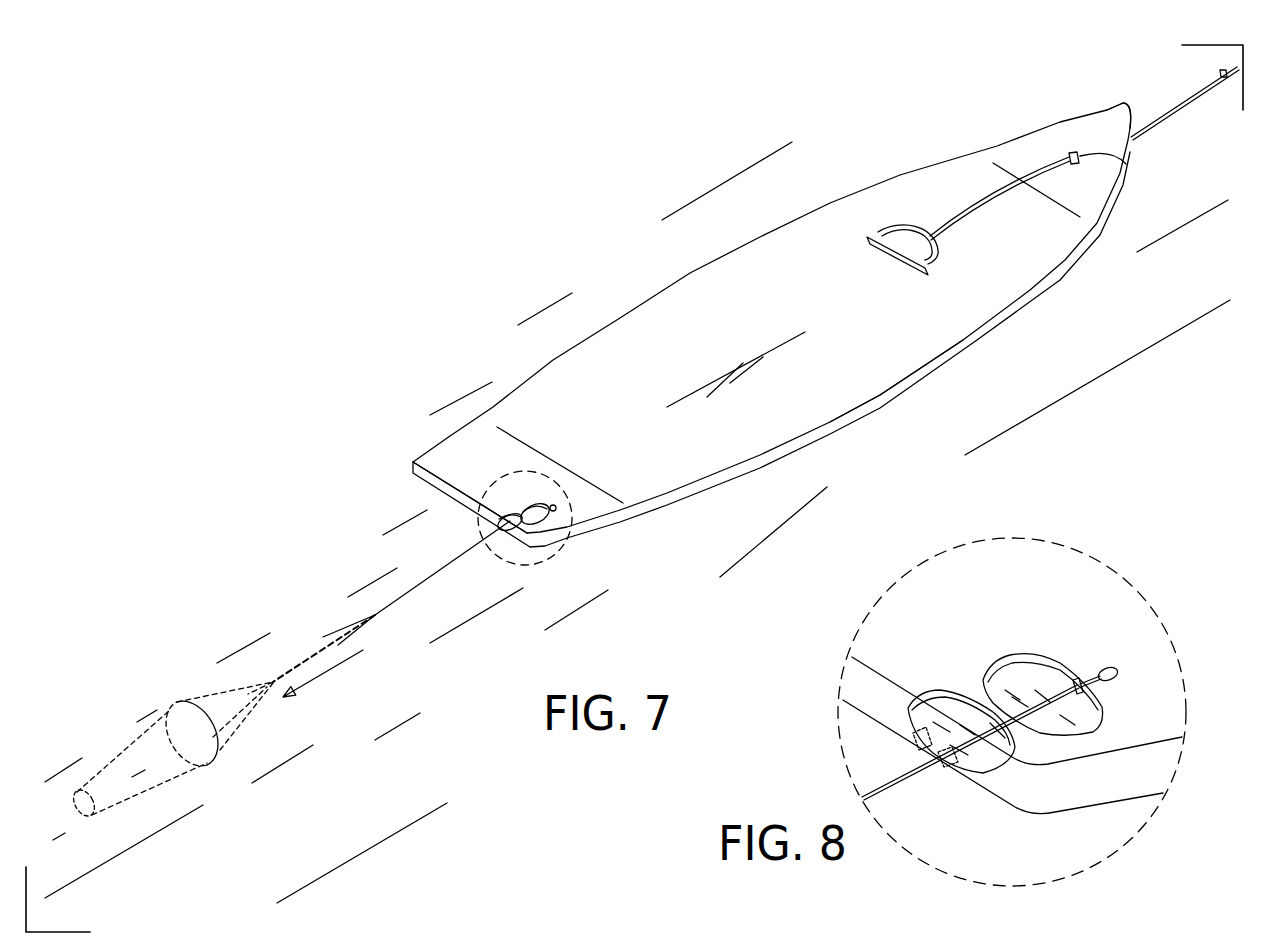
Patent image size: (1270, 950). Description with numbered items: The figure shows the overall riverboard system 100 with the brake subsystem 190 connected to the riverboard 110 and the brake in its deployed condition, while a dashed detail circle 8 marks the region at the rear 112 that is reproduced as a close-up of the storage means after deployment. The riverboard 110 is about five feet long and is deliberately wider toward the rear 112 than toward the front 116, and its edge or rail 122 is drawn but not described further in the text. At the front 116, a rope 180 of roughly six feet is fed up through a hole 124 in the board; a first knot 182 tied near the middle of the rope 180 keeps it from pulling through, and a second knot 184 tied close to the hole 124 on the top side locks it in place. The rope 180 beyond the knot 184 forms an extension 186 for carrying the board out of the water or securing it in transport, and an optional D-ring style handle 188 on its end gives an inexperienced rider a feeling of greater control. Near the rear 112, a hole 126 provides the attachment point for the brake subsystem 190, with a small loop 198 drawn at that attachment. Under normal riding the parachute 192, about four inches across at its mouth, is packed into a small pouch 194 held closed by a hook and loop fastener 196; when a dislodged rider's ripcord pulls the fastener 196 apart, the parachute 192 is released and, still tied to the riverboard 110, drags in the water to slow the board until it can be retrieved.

In FIG. 7, the water sports system / board assembly 100 is at (465, 227).
In FIG. 7, the riverboard 110 is at (693, 287).
In FIG. 7, the rear 112 is at (433, 485).
In FIG. 7, the front 116 is at (1116, 115).
In FIG. 7, the rail of board 122 is at (880, 400).
In FIG. 7, the hole 124 is at (1123, 160).
In FIG. 7, the hole 126 is at (553, 506).
In FIG. 8, the hole 126 is at (1108, 668).
In FIG. 7, the rope 180 is at (1167, 112).
In FIG. 7, the first knot 182 is at (1220, 72).
In FIG. 7, the second knot 184 is at (1067, 158).
In FIG. 7, the extension 186 is at (963, 213).
In FIG. 7, the handle 188 is at (897, 257).
In FIG. 7, the brake subsystem 190 is at (253, 503).
In FIG. 7, the parachute 192 is at (187, 702).
In FIG. 8, the parachute 192 is at (981, 738).
In FIG. 7, the small pouch 194 is at (500, 518).
In FIG. 8, the small pouch 194 is at (1005, 673).
In FIG. 8, the hook and loop fastener 196 is at (1070, 667).
In FIG. 8, the leash loop 198 is at (1117, 673).
In FIG. 7, the detail circle for FIG. 8 is at (503, 477).